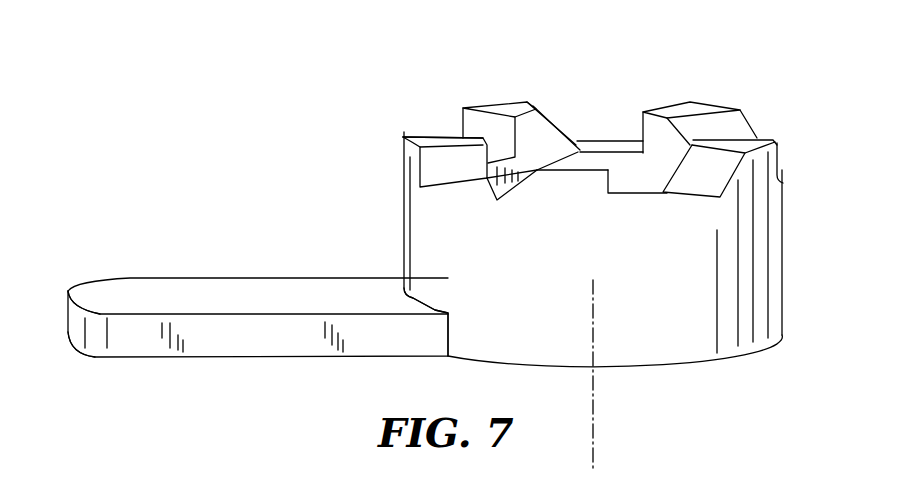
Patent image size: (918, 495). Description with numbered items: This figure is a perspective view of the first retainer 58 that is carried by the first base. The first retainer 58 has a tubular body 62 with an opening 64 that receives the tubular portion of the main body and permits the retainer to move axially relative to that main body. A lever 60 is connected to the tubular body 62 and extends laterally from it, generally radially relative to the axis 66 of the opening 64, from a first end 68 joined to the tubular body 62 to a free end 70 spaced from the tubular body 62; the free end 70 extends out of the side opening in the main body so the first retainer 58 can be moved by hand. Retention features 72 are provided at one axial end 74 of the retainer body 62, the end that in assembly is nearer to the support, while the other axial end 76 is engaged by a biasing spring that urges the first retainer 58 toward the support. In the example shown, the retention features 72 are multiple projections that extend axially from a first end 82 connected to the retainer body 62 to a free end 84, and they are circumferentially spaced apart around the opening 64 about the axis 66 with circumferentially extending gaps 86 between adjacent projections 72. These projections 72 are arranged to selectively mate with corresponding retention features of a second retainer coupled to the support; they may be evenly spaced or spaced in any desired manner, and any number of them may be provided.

The first retainer 58 is at (760, 83).
The lever 60 is at (202, 295).
The tubular body 62 is at (675, 342).
The opening 64 is at (640, 177).
The axis 66 is at (598, 428).
The first end 68 is at (417, 302).
The free end 70 is at (80, 325).
The retention features 72 is at (498, 108).
The first axial end 74 is at (402, 140).
The second axial end 76 is at (768, 346).
The first end 82 is at (497, 200).
The free end 84 is at (587, 157).
The gaps 86 is at (477, 190).